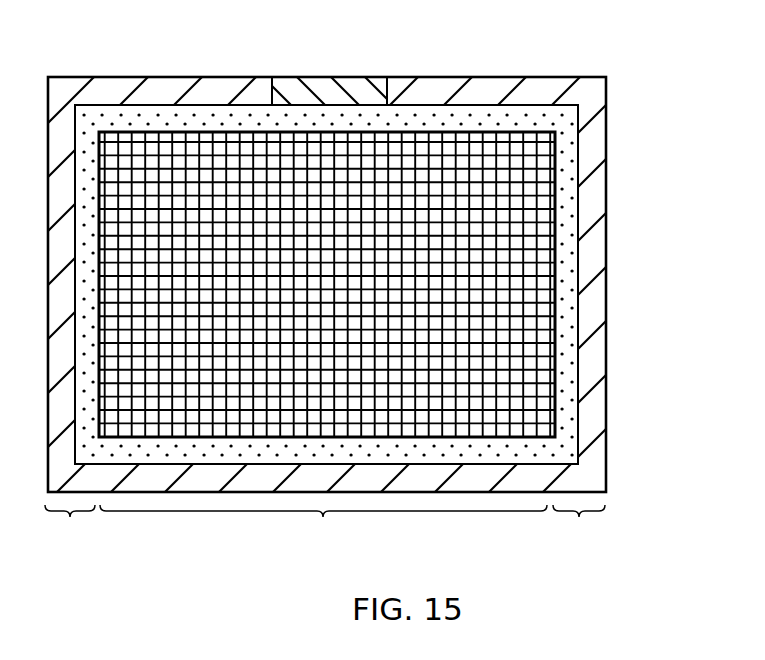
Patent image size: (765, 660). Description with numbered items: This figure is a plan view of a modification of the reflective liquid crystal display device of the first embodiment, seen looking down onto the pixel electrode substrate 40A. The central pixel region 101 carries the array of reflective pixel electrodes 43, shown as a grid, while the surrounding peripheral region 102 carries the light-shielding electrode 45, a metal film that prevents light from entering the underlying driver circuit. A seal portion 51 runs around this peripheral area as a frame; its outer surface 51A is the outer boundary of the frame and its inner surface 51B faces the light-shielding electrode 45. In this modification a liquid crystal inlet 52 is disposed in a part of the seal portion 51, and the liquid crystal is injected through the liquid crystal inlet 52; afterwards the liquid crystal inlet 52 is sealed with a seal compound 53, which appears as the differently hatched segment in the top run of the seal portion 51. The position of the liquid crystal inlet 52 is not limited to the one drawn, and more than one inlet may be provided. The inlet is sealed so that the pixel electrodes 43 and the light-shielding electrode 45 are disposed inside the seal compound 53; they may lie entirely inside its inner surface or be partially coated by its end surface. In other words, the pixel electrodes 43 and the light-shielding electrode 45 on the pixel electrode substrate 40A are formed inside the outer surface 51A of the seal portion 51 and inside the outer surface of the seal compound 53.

The pixel electrode substrate 40A is at (366, 284).
The reflective pixel electrode 43 is at (166, 142).
The light-shielding electrode 45 is at (566, 217).
The seal portion 51 is at (598, 103).
The outer surface of the seal portion 51A is at (607, 135).
The inner surface of the seal portion 51B is at (581, 168).
The liquid crystal inlet 52 is at (380, 78).
The seal compound 53 is at (313, 92).
The pixel region 101 is at (323, 531).
The peripheral region 102 is at (325, 532).